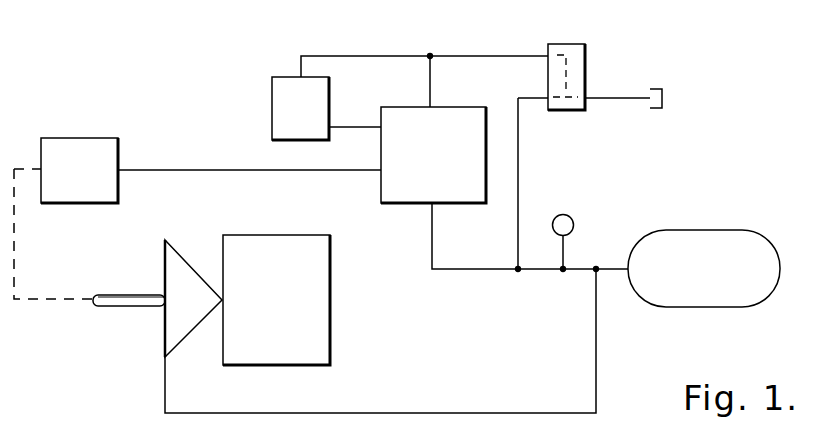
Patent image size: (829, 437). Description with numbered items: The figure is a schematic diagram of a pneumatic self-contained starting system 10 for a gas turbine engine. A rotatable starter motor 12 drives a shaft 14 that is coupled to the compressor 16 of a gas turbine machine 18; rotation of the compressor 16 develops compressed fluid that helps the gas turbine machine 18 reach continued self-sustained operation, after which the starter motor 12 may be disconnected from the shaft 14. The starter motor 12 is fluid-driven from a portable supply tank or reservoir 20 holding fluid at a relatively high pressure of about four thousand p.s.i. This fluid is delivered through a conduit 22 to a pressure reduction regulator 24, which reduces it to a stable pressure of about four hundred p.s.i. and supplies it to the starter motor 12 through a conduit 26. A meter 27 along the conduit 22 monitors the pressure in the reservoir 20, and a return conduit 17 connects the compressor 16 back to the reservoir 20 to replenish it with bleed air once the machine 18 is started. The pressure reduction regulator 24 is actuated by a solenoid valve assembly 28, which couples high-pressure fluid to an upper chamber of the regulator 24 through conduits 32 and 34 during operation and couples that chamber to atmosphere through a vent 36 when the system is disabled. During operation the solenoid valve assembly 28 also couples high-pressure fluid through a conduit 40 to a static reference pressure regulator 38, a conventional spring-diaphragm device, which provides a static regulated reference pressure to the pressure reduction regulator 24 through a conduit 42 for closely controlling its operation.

The pneumatic self-contained starting system 10 is at (148, 88).
The starter motor 12 is at (115, 160).
The shaft 14 is at (122, 306).
The compressor 16 is at (183, 268).
The return conduit 17 is at (486, 412).
The gas turbine machine 18 is at (325, 343).
The supply tank or reservoir 20 is at (740, 237).
The conduit 22 is at (478, 270).
The pressure reduction regulator 24 is at (420, 200).
The conduit 26 is at (252, 172).
The meter 27 is at (568, 220).
The solenoid valve assembly 28 is at (587, 60).
The conduit 32 is at (470, 55).
The conduit 34 is at (432, 92).
The vent 36 is at (625, 100).
The static reference pressure regulator 38 is at (322, 83).
The conduit 40 is at (348, 53).
The conduit 42 is at (360, 130).